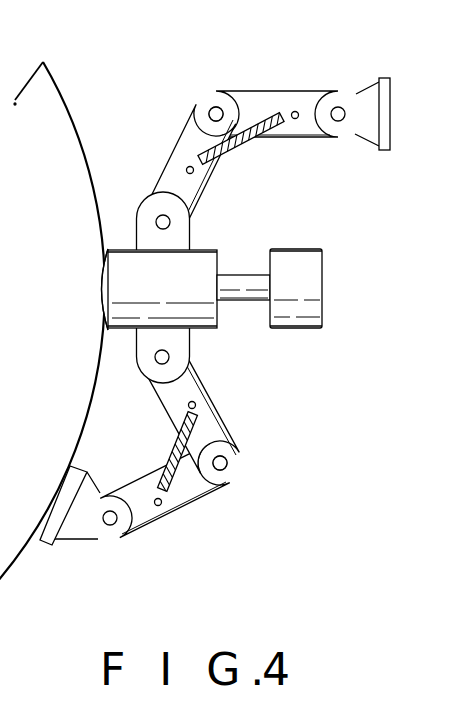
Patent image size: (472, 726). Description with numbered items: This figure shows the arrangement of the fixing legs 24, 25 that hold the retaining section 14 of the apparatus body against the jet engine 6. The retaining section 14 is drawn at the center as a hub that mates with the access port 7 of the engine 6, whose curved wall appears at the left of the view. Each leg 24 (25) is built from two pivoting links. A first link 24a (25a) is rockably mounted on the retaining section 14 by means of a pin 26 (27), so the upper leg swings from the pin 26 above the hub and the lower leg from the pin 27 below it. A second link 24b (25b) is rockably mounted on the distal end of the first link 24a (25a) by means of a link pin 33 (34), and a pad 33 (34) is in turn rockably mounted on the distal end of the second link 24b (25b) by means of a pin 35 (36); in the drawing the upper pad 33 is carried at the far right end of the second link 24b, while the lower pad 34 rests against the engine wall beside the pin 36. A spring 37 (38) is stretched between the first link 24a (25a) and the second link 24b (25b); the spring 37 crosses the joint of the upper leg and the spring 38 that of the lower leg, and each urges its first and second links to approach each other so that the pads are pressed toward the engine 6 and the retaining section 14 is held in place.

The jet engine 6 is at (65, 97).
The access port 7 is at (97, 295).
The retaining section 14 is at (203, 257).
The leg 24 is at (193, 88).
The first link 24a is at (192, 132).
The second link 24b is at (270, 103).
The leg 25 is at (250, 408).
The first link 25a is at (228, 450).
The second link 25b is at (200, 487).
The pin 26 is at (158, 218).
The pin 27 is at (169, 357).
The link pin / pad 33 is at (216, 106).
The link pin / pad 34 is at (63, 523).
The pin 35 is at (340, 106).
The pin 36 is at (116, 522).
The spring 37 is at (252, 147).
The spring 38 is at (178, 480).